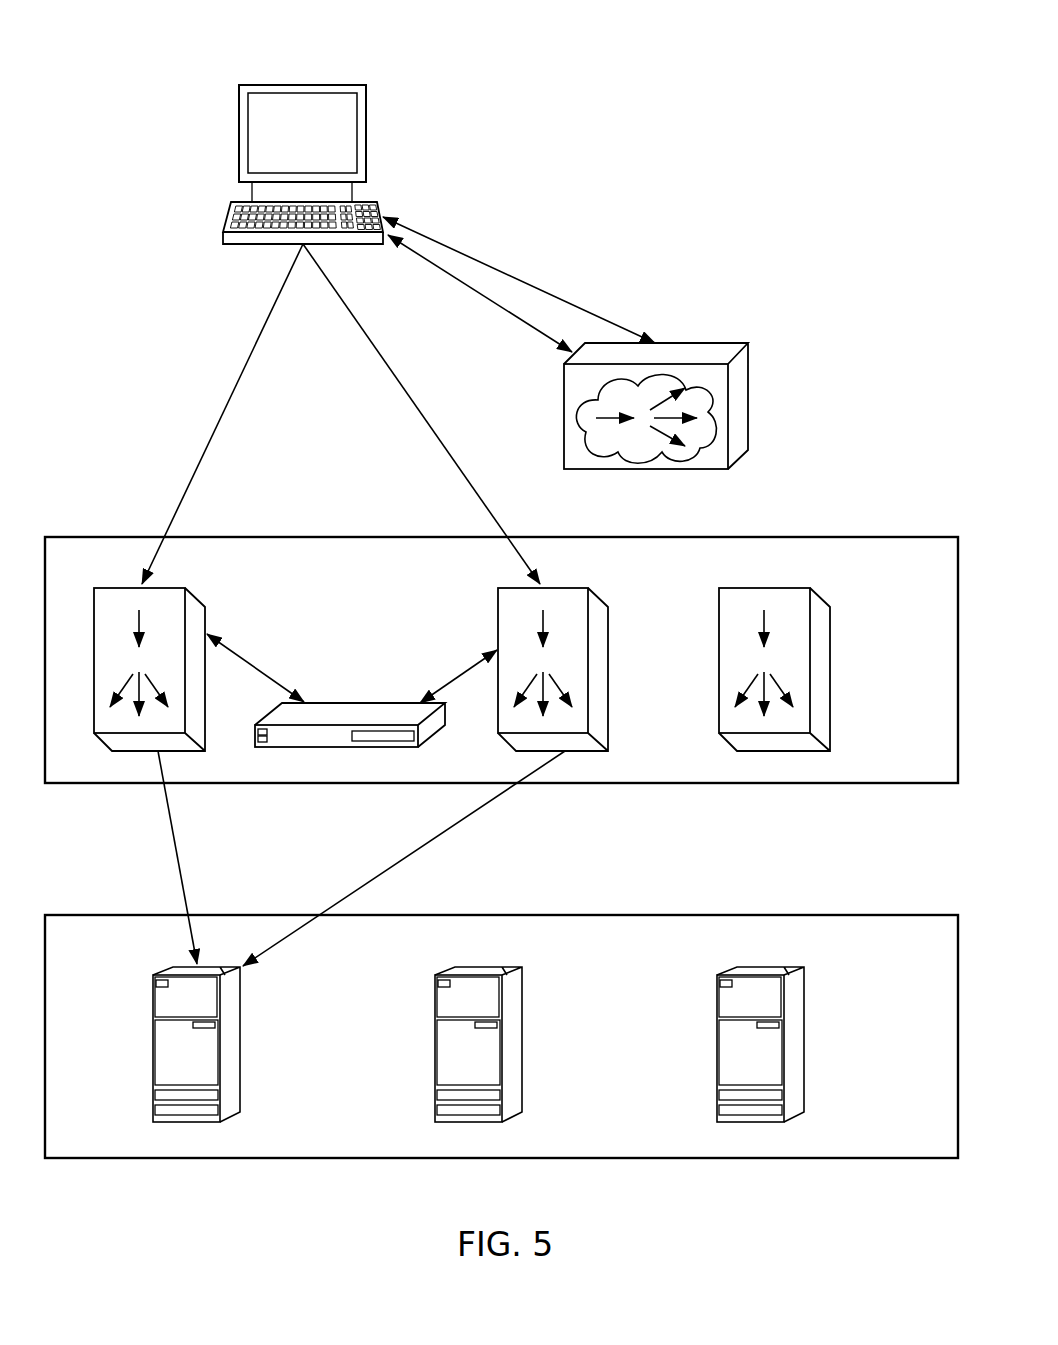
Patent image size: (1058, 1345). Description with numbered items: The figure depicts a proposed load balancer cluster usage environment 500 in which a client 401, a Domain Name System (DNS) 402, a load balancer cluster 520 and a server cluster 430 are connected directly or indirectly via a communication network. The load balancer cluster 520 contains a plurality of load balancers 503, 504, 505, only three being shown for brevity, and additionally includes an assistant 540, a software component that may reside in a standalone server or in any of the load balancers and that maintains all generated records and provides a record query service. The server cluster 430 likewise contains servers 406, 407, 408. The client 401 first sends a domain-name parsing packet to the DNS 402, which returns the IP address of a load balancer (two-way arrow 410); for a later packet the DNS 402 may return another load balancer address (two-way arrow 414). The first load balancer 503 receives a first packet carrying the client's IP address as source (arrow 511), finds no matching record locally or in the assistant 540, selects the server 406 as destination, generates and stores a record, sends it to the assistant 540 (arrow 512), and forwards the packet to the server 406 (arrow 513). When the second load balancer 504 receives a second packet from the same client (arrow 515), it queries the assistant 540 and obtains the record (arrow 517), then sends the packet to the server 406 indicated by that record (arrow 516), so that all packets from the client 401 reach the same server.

The load balancer cluster usage environment 500 is at (774, 105).
The client 401 is at (302, 85).
The two-way arrow 410 is at (490, 265).
The two-way arrow 414 is at (469, 290).
The Domain Name System (DNS) 402 is at (749, 394).
The arrow 511 is at (217, 424).
The arrow 515 is at (441, 438).
The load balancer cluster 520 is at (929, 587).
The load balancer 503 is at (180, 588).
The load balancer 504 is at (609, 676).
The load balancer 505 is at (831, 676).
The assistant 540 is at (362, 703).
The arrow 512 is at (258, 668).
The arrow 517 is at (452, 670).
The arrow 513 is at (166, 815).
The arrow 516 is at (486, 800).
The server cluster 430 is at (929, 964).
The server 406 is at (243, 1036).
The server 407 is at (525, 1036).
The server 408 is at (807, 1036).